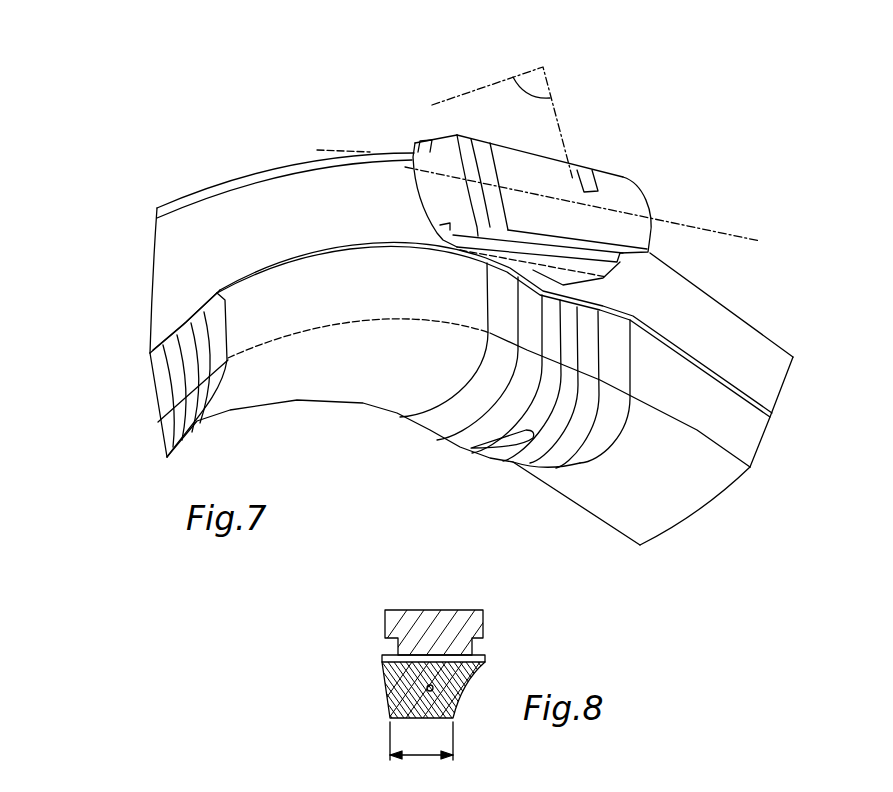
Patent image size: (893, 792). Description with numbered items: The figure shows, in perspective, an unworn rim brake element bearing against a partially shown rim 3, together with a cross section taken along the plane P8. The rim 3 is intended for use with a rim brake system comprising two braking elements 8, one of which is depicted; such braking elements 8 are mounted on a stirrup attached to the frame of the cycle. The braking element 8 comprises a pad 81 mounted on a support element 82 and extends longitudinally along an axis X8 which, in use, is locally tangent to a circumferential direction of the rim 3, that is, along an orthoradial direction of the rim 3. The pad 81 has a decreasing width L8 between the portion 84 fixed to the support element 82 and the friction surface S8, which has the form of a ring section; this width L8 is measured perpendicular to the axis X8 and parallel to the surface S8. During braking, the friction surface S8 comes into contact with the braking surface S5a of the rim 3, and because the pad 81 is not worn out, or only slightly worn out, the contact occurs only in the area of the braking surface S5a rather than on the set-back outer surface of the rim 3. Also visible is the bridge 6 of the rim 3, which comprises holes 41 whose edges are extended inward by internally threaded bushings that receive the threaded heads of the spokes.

In FIG. 7, the rim 3 is at (177, 237).
In FIG. 7, the bridge 6 is at (315, 384).
In FIG. 7, the braking element 8 is at (507, 147).
In FIG. 7, the hole 41 is at (503, 441).
In FIG. 7, the pad 81 is at (387, 220).
In FIG. 8, the pad 81 is at (475, 669).
In FIG. 7, the support element 82 is at (618, 193).
In FIG. 8, the support element 82 is at (474, 611).
In FIG. 7, the portion fixed to the support 84 is at (409, 160).
In FIG. 8, the portion fixed to the support 84 is at (388, 662).
In FIG. 7, the braking surface S5a is at (184, 265).
In FIG. 7, the friction surface S8 is at (376, 193).
In FIG. 8, the friction surface S8 is at (416, 721).
In FIG. 7, the axis X8 is at (595, 210).
In FIG. 8, the axis X8 is at (427, 690).
In FIG. 7, the plane P8 is at (502, 123).
In FIG. 8, the width L8 is at (421, 741).